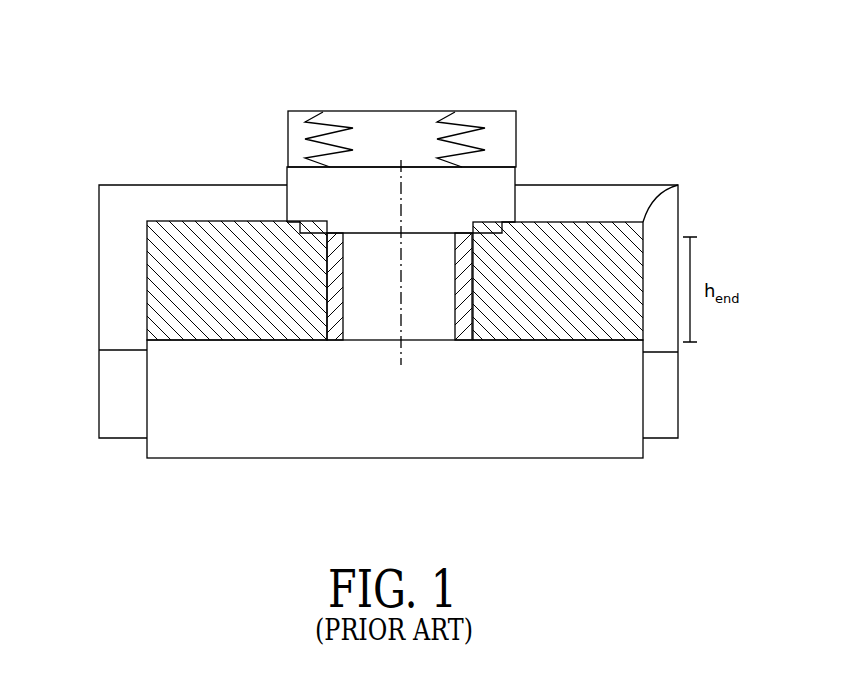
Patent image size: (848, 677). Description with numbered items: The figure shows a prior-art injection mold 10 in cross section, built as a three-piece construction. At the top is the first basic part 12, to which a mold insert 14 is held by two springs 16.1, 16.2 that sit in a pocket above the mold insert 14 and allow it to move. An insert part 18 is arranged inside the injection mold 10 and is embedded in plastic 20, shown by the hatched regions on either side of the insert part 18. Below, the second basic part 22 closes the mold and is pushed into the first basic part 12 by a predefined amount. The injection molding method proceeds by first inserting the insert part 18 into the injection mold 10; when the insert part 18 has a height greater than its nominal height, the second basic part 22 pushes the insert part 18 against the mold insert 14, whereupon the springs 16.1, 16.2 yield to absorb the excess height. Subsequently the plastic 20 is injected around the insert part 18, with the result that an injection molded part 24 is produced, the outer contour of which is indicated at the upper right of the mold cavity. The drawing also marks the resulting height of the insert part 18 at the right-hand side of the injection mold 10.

The injection mold 10 is at (652, 150).
The first basic part 12 is at (667, 232).
The mold insert 14 is at (507, 175).
The spring 16.1 is at (472, 126).
The spring 16.2 is at (335, 122).
The insert part 18 is at (335, 341).
The plastic 20 is at (175, 275).
The second basic part 22 is at (395, 399).
The injection molded part 24 is at (678, 187).